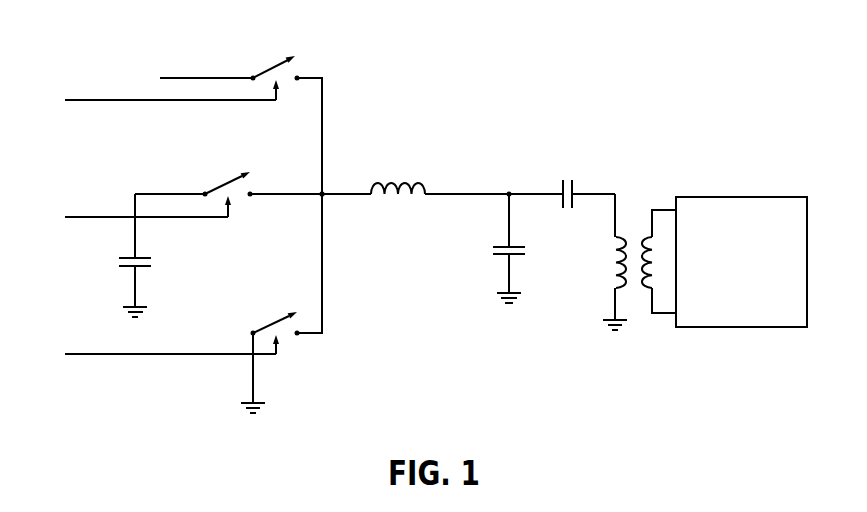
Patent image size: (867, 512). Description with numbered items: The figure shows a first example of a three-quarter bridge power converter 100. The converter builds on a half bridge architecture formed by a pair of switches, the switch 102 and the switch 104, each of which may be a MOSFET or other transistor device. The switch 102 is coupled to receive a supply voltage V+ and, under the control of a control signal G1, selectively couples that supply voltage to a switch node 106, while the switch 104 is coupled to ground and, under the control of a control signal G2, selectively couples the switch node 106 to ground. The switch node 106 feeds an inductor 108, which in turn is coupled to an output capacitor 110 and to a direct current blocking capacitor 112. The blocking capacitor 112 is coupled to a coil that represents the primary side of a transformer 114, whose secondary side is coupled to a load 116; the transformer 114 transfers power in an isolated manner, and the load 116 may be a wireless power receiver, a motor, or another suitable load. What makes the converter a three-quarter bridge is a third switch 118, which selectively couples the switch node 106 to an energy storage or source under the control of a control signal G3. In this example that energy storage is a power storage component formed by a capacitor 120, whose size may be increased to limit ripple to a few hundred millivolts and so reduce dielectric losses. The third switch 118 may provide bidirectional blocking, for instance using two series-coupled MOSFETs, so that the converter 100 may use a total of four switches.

The three-quarter bridge power converter 100 is at (664, 71).
The switch 102 is at (267, 70).
The switch 104 is at (267, 322).
The switch node 106 is at (325, 198).
The inductor 108 is at (418, 185).
The output capacitor 110 is at (502, 257).
The direct current (DC) blocking capacitor 112 is at (562, 185).
The transformer 114 is at (636, 217).
The load 116 is at (750, 197).
The third switch 118 is at (227, 186).
The capacitor 120 is at (143, 267).